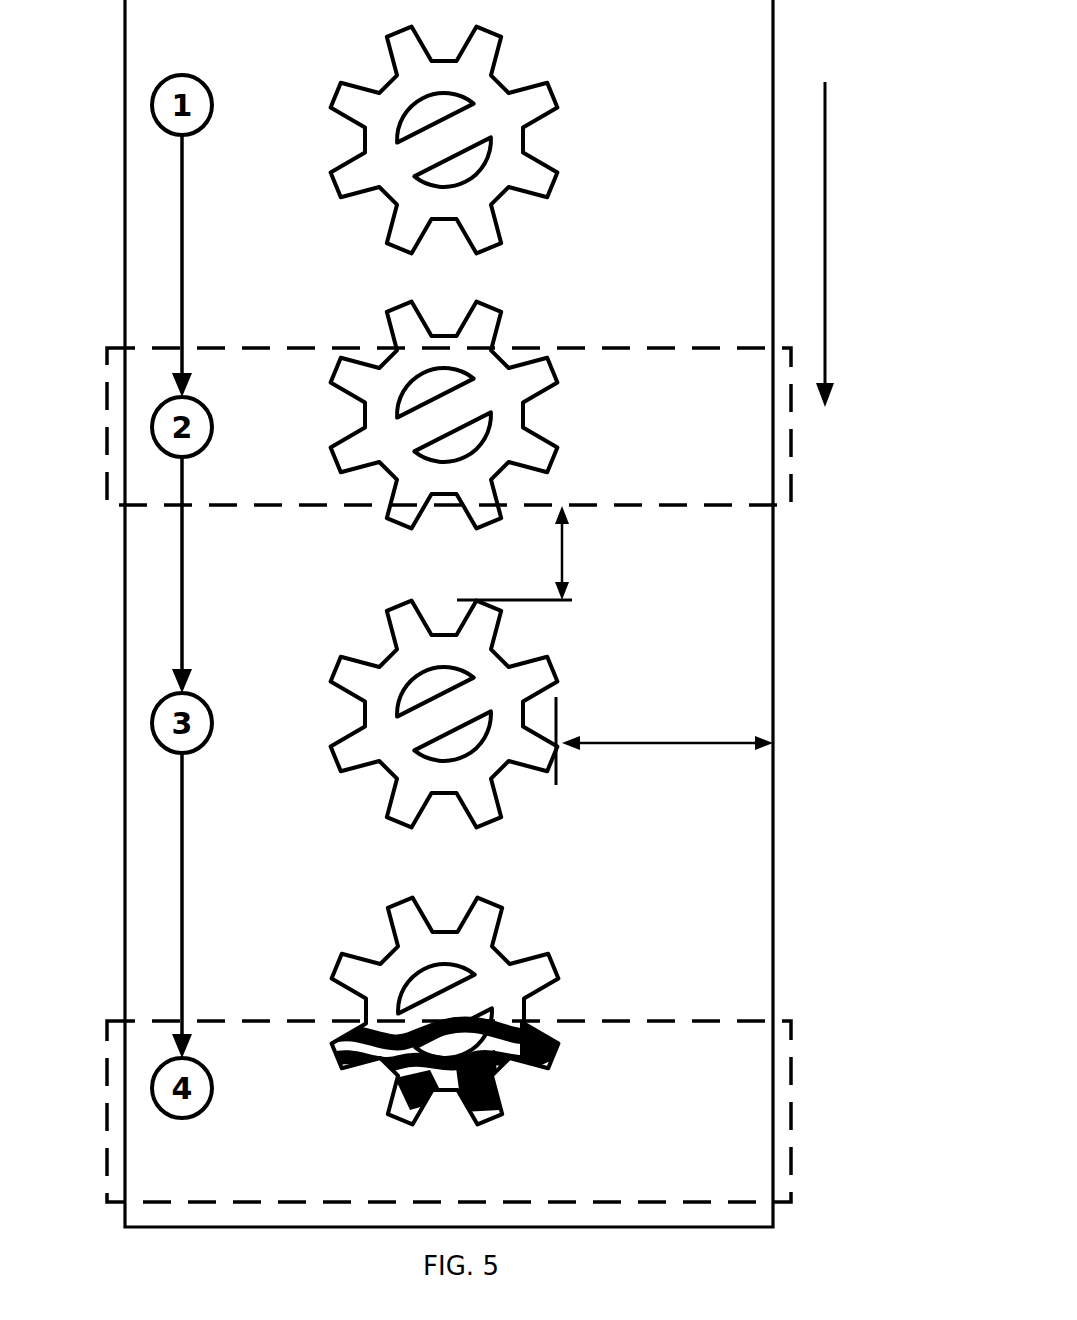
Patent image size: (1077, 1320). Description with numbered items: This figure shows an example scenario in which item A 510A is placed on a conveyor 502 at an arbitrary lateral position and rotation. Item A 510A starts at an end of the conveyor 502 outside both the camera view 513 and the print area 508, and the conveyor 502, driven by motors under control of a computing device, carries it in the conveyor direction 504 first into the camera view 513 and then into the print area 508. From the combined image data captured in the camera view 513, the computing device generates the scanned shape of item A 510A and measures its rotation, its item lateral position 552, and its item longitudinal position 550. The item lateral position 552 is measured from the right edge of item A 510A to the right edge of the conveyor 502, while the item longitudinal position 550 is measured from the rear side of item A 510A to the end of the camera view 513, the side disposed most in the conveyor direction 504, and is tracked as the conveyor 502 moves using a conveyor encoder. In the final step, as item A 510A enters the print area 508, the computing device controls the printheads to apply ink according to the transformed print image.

The conveyor 502 is at (449, 613).
The conveyor direction 504 is at (871, 244).
The print area 508 is at (107, 1037).
The item A 510A is at (375, 146).
The camera view 513 is at (107, 392).
The item longitudinal position 550 is at (565, 558).
The item lateral position 552 is at (668, 745).